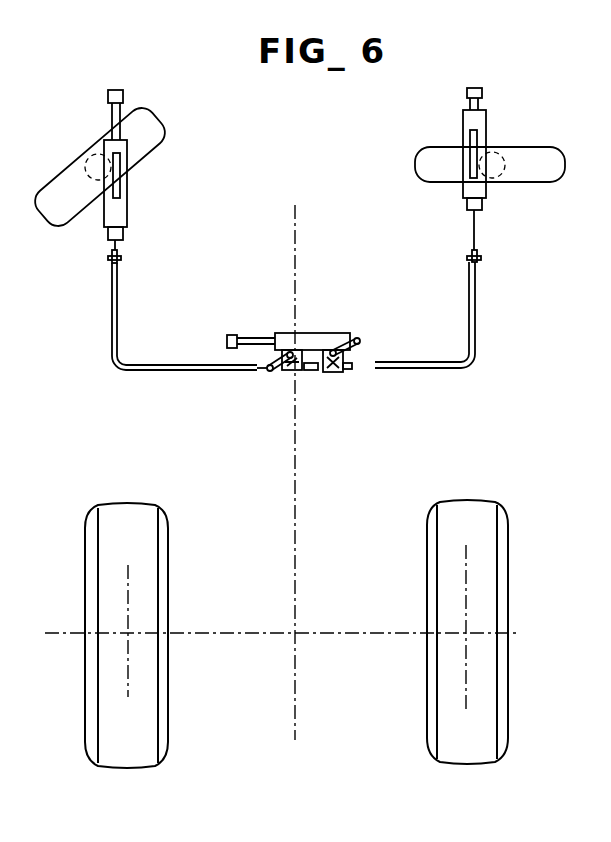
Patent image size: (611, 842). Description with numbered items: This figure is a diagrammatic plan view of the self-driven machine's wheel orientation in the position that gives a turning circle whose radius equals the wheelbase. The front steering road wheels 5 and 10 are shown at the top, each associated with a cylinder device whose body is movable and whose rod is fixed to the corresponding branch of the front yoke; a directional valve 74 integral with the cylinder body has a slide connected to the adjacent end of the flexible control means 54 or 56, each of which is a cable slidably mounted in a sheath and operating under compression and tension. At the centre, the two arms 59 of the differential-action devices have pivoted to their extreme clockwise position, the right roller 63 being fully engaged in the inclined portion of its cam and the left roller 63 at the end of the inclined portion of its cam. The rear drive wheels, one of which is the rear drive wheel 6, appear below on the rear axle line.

The front steering road wheel 5 is at (73, 205).
The front steering road wheel 10 is at (432, 168).
The flexible control means 54 is at (115, 243).
The directional valve 74 is at (467, 204).
The flexible control means 56 is at (474, 234).
The roller 63 is at (359, 339).
The arm 59 is at (346, 353).
The rear drive wheel 6 is at (455, 543).